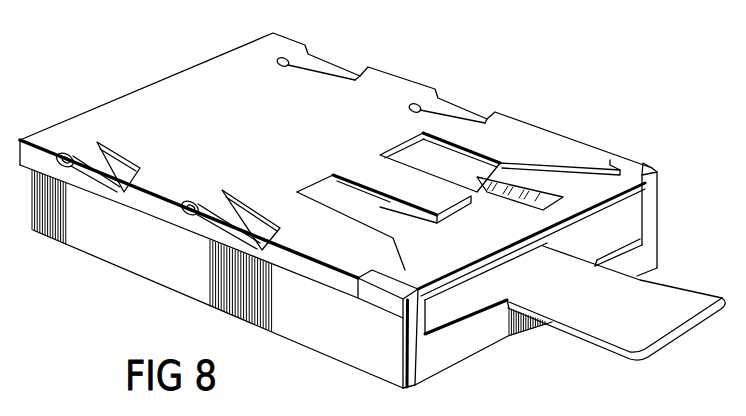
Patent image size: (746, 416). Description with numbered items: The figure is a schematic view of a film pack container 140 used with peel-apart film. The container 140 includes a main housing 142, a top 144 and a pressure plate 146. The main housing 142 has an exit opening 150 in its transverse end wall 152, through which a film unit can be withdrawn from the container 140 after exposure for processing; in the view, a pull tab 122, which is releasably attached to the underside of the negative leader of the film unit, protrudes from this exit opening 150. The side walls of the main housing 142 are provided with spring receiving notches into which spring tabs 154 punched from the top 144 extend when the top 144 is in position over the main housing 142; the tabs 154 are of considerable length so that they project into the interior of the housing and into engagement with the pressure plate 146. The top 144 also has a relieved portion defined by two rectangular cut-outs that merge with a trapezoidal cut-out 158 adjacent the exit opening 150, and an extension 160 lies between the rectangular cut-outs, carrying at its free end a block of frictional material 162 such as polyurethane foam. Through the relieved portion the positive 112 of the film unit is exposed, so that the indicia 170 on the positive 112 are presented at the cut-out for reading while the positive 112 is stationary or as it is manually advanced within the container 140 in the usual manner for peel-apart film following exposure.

The container 140 is at (552, 114).
The top 144 is at (188, 82).
The main housing 142 is at (178, 261).
The spring tabs 154 is at (493, 137).
The trapezoidal cut-out 158 is at (552, 175).
The extension 160 is at (428, 195).
The block of frictional material 162 is at (423, 218).
The indicia 170 is at (500, 177).
The positive 112 is at (487, 246).
The exit opening 150 is at (635, 214).
The pressure plate 146 is at (448, 308).
The transverse end wall 152 is at (453, 352).
The pull tab 122 is at (687, 326).